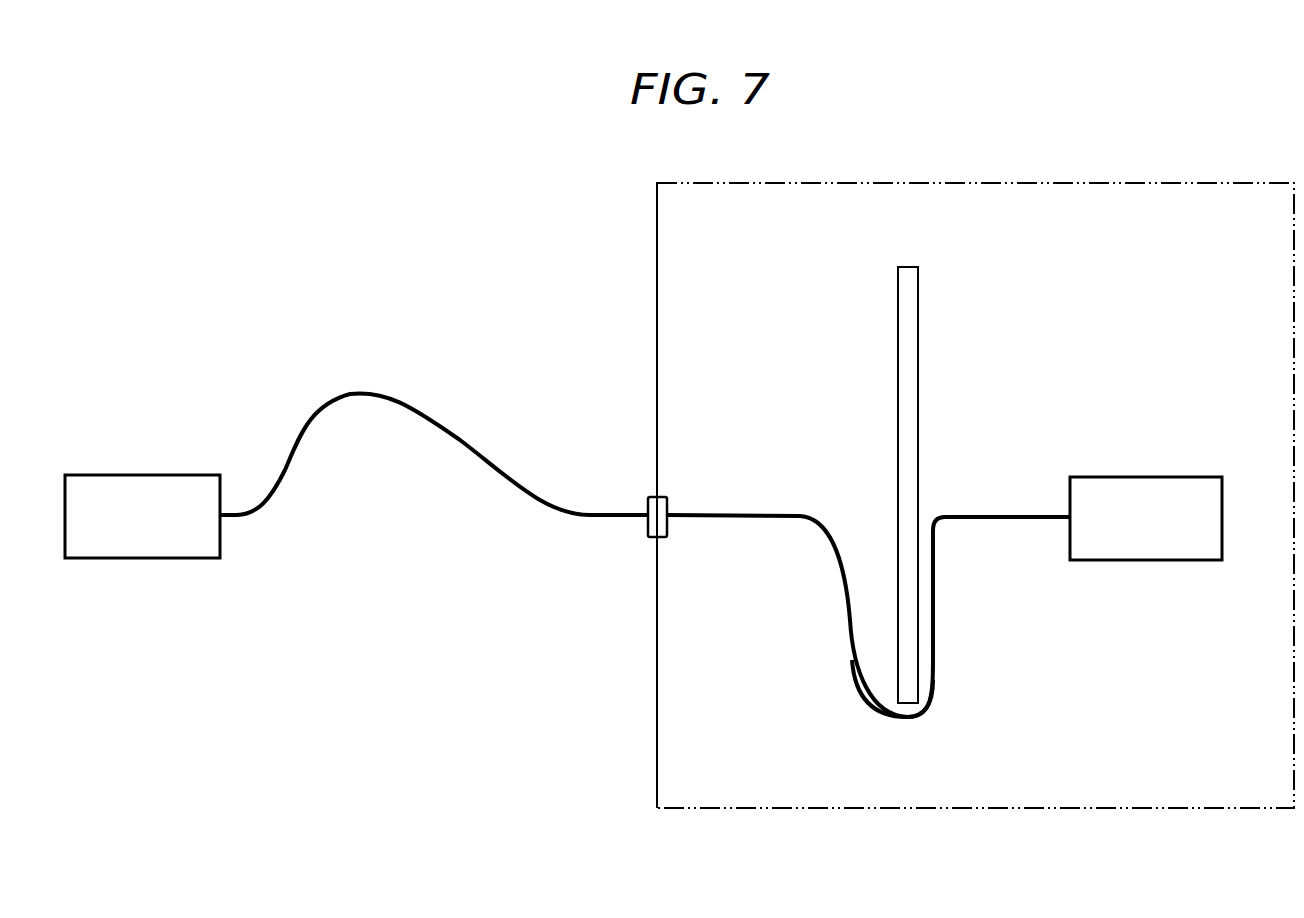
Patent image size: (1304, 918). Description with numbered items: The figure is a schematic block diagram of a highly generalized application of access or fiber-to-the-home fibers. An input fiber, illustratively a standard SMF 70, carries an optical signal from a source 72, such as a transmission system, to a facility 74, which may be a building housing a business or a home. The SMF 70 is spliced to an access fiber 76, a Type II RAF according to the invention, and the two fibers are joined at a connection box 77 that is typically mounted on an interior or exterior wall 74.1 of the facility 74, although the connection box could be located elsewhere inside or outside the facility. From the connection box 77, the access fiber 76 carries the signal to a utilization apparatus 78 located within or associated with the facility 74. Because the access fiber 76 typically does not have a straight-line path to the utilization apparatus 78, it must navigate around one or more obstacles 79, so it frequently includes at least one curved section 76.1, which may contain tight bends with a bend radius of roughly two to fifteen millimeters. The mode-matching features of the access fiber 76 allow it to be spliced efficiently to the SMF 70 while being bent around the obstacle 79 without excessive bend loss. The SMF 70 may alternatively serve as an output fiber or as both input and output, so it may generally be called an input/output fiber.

The standard SMF input fiber 70 is at (493, 470).
The source 72 is at (96, 475).
The facility 74 is at (1245, 182).
The wall 74.1 is at (657, 322).
The access fiber 76 is at (808, 523).
The curved section 76.1 is at (928, 716).
The connection box 77 is at (667, 523).
The utilization apparatus 78 is at (1167, 477).
The obstacle 79 is at (918, 292).